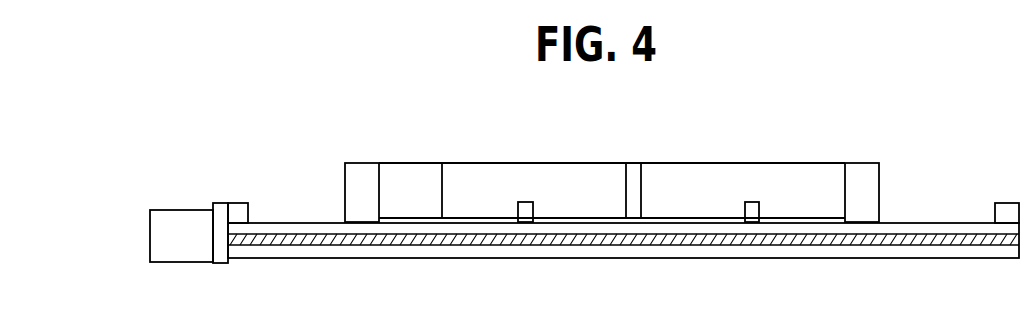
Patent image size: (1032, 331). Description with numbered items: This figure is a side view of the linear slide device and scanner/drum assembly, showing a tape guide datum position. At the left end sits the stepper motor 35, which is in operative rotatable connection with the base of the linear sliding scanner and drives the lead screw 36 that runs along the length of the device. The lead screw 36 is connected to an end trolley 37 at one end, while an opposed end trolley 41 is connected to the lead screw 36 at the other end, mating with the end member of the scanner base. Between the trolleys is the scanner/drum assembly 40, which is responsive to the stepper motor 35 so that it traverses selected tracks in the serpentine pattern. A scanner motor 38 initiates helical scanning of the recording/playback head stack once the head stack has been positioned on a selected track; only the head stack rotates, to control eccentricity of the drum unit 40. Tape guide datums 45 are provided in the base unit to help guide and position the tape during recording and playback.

The stepper motor 35 is at (151, 224).
The lead screw 36 is at (310, 228).
The end trolley 37 is at (344, 162).
The scanner motor 38 is at (413, 162).
The scanner/drum assembly 40 is at (845, 160).
The opposed end trolley 41 is at (888, 173).
The tape guide datum 45 is at (533, 206).